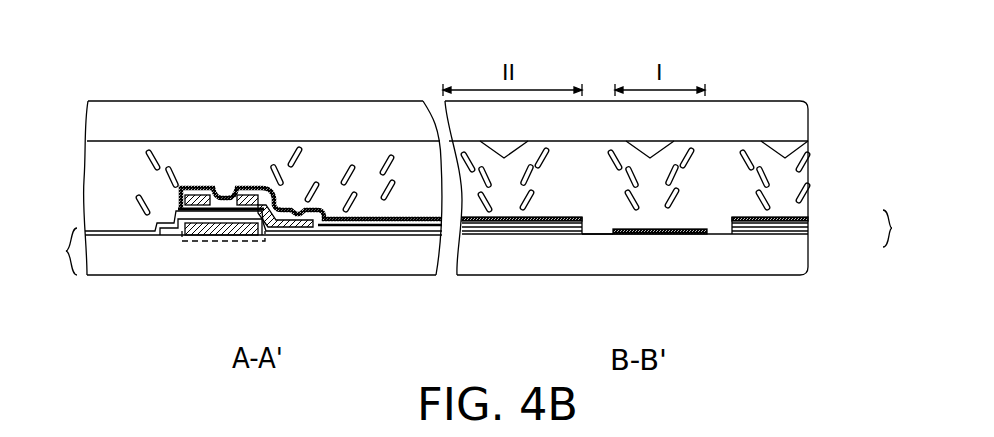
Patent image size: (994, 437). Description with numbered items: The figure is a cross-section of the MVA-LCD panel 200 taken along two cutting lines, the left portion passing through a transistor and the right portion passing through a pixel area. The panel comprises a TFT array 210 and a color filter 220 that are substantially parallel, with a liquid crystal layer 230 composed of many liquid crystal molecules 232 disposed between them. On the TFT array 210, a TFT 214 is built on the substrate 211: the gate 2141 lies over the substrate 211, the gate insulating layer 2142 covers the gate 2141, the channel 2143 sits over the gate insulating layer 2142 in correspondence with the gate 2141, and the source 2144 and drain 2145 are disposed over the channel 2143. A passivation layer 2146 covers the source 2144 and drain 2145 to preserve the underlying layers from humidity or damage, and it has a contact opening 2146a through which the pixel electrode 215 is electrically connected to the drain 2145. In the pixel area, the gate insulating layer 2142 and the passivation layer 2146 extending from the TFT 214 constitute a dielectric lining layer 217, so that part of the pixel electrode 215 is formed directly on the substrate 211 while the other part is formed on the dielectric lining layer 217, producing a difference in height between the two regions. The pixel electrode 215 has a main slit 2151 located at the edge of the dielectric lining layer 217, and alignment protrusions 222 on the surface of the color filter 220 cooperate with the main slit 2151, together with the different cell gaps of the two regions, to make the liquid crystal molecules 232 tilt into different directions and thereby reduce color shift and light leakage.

The MVA-LCD panel 200 is at (155, 402).
The TFT array 210 is at (50, 251).
The substrate 211 is at (808, 255).
The TFT 214 is at (223, 241).
The gate 2141 is at (243, 235).
The gate insulating layer 2142 is at (179, 231).
The channel 2143 is at (178, 210).
The source 2144 is at (190, 193).
The drain 2145 is at (253, 190).
The passivation layer 2146 is at (245, 192).
The contact opening 2146a is at (300, 206).
The pixel electrode 215 is at (327, 204).
The main slit 2151 is at (593, 238).
The dielectric lining layer 217 is at (909, 228).
The color filter 220 is at (800, 131).
The alignment protrusion 222 is at (653, 141).
The liquid crystal layer 230 is at (808, 186).
The liquid crystal molecule 232 is at (782, 168).